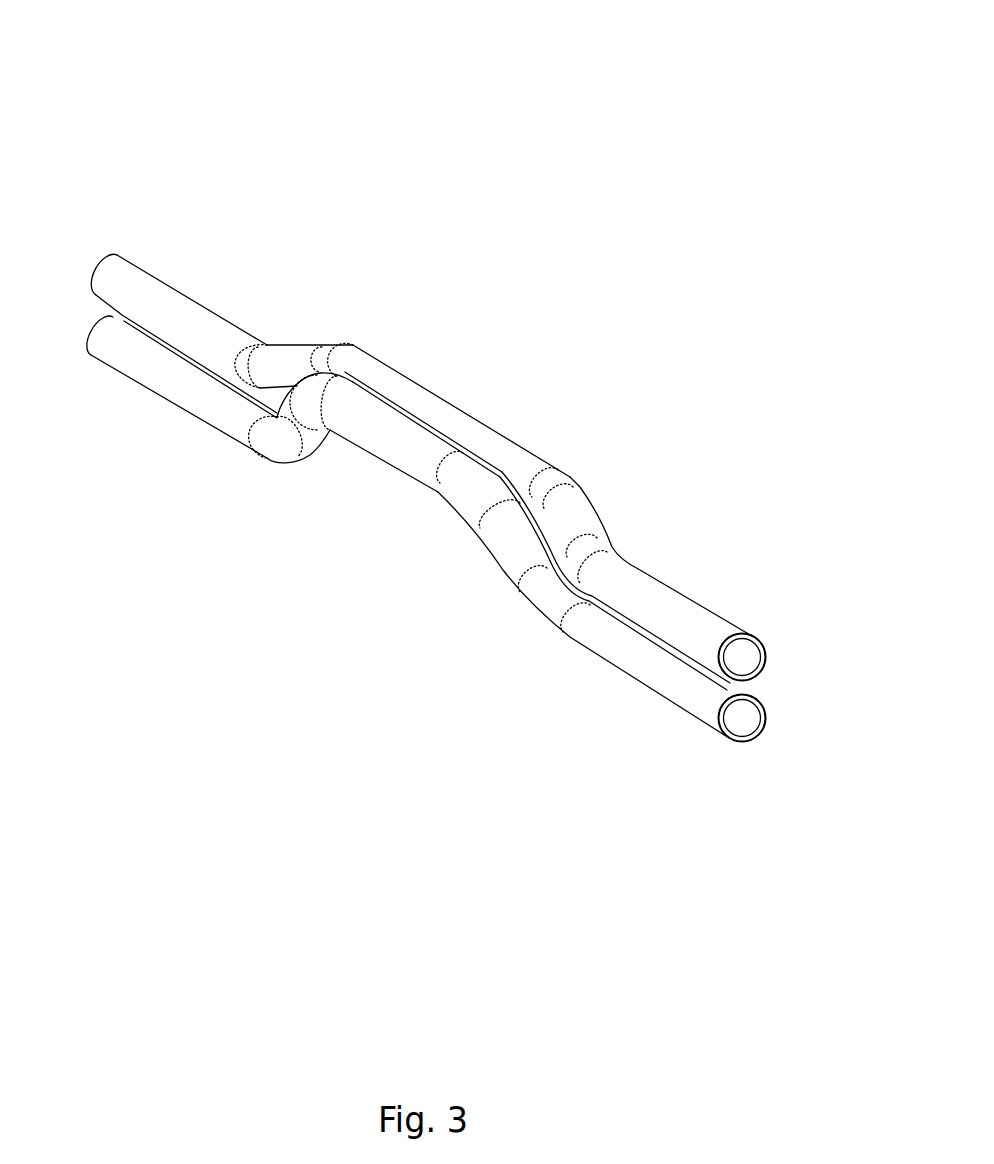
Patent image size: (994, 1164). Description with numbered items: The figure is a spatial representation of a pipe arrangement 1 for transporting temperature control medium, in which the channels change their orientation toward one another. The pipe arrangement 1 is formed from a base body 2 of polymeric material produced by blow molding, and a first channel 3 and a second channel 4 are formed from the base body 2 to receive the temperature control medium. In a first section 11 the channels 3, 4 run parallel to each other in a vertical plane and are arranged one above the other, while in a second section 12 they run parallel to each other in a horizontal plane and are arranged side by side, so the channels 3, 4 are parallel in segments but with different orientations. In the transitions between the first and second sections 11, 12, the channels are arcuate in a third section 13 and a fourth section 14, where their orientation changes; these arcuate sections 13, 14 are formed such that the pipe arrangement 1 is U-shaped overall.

The pipe arrangement 1 is at (561, 150).
The base body 2 is at (622, 652).
The first channel 3 is at (190, 313).
The second channel 4 is at (175, 385).
The first section 11 is at (145, 226).
The second section 12 is at (325, 578).
The third section 13 is at (300, 360).
The fourth section 14 is at (280, 443).